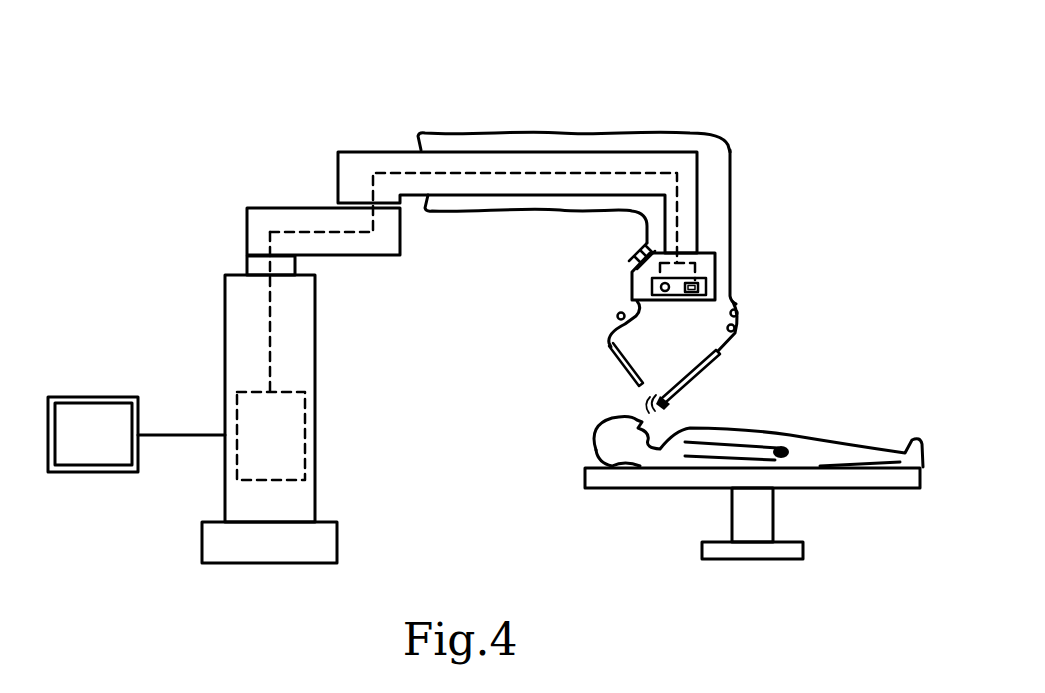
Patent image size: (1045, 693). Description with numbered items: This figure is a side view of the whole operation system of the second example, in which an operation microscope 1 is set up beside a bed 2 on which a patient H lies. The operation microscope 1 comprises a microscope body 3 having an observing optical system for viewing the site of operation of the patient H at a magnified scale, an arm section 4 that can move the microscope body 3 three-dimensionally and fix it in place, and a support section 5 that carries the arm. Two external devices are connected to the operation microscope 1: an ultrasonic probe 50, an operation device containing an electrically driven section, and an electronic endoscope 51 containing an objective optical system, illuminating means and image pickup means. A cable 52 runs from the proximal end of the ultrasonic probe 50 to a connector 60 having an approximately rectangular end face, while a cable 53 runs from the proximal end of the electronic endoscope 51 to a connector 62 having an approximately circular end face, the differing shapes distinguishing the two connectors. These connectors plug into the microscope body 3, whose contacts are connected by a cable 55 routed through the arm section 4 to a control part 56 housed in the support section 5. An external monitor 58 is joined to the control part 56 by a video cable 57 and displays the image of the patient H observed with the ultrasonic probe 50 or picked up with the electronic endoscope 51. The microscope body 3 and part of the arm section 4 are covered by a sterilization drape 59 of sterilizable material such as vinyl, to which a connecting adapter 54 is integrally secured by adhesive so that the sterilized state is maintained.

The operation microscope 1 is at (424, 128).
The bed 2 is at (608, 478).
The microscope body 3 is at (713, 257).
The arm section 4 is at (419, 282).
The support section 5 is at (307, 325).
The ultrasonic probe 50 is at (737, 362).
The electronic endoscope 51 is at (594, 352).
The cable 52 is at (742, 318).
The cable 53 is at (616, 317).
The connecting adapter 54 is at (731, 277).
The cable 55 is at (594, 173).
The control part 56 is at (297, 442).
The video cable 57 is at (180, 437).
The monitor 58 is at (90, 413).
The sterilization drape 59 is at (728, 148).
The connector 60 is at (702, 272).
The connector 62 is at (656, 285).
The patient H is at (593, 440).